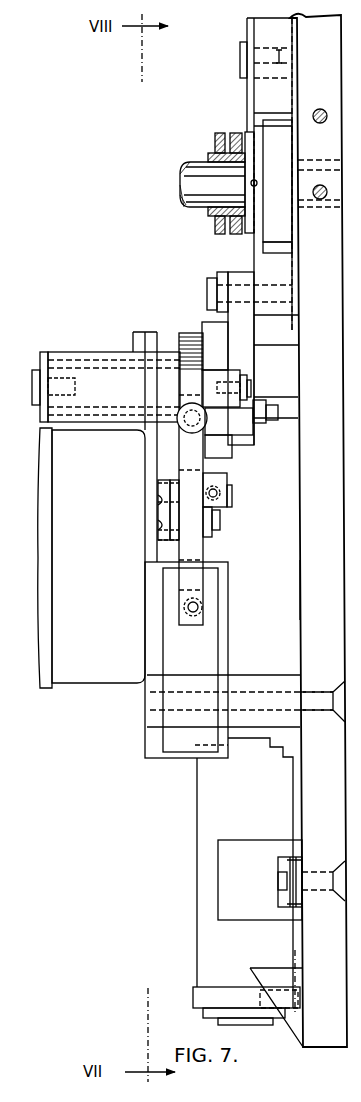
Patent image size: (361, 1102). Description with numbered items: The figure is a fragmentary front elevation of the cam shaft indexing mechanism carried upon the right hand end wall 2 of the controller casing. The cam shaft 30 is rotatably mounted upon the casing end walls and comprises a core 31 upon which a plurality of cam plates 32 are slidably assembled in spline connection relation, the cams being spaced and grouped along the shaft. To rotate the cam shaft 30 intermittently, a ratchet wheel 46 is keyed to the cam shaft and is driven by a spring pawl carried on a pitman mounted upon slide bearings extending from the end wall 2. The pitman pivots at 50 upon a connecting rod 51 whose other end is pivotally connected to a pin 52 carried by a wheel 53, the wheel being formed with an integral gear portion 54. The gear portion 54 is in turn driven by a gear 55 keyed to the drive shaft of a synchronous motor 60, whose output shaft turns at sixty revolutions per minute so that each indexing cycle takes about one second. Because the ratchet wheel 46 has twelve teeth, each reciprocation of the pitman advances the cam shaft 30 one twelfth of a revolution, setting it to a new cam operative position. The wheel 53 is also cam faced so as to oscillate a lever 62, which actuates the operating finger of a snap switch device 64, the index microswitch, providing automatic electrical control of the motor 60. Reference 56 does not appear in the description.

The end wall 2 is at (340, 314).
The cam shaft 30 is at (181, 207).
The core 31 is at (192, 182).
The cam plates 32 is at (215, 148).
The ratchet wheel 46 is at (267, 235).
The pivot 50 is at (212, 300).
The connecting rod 51 is at (233, 319).
The pin 52 is at (272, 423).
The wheel 53 is at (225, 447).
The gear portion 54 is at (178, 338).
The gear 55 is at (198, 463).
The adjusting bolt 56 is at (200, 541).
The synchronous motor 60 is at (91, 558).
The lever 62 is at (330, 590).
The snap switch device 64 is at (213, 652).